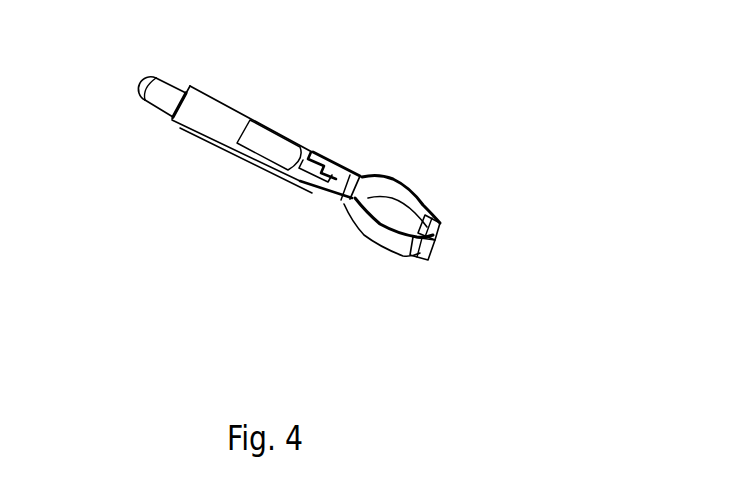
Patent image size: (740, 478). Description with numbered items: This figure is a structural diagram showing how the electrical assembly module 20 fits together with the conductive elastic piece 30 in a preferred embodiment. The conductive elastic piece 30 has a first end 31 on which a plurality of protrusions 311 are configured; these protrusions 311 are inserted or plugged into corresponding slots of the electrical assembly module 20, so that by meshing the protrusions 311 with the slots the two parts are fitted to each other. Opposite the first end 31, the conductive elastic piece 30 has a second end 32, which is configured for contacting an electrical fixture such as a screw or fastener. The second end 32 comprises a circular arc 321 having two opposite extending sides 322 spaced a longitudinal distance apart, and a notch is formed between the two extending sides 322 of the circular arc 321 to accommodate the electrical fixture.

The electrical assembly module 20 is at (208, 122).
The conductive elastic piece 30 is at (385, 219).
The first end 31 is at (292, 183).
The protrusions 311 is at (300, 190).
The second end 32 is at (466, 181).
The circular arc 321 is at (406, 197).
The extending sides 322 is at (440, 220).